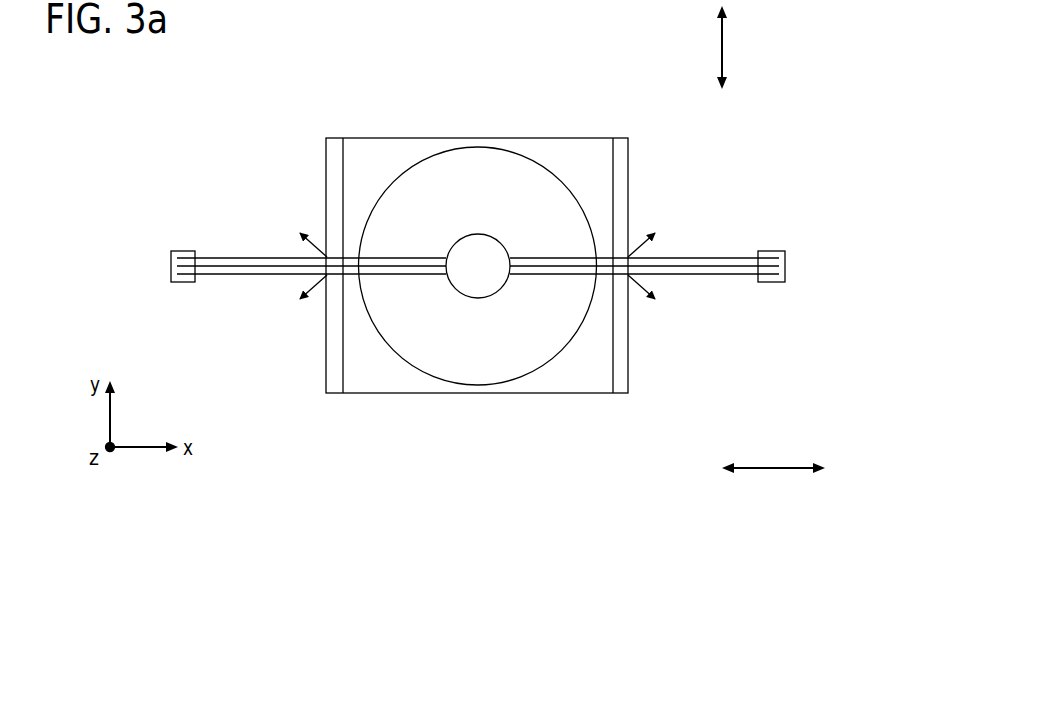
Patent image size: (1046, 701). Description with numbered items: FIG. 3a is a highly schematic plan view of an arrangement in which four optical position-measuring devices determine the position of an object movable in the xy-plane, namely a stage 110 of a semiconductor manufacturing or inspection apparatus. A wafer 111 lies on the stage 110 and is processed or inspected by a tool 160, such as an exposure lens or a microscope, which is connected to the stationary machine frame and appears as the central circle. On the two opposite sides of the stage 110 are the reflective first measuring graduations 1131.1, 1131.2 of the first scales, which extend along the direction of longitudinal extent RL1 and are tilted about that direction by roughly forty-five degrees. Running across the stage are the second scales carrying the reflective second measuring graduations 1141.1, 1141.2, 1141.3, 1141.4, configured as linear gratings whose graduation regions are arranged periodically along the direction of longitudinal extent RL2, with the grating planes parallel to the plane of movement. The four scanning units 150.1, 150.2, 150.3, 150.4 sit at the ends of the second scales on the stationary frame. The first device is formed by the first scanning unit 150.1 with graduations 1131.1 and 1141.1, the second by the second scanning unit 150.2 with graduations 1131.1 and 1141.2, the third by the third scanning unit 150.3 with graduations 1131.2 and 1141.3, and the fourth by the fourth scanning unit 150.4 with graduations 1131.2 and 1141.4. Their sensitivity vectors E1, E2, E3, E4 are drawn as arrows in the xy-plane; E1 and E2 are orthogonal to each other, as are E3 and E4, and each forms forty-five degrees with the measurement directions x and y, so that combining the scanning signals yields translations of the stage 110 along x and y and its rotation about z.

The stage 110 is at (376, 375).
The wafer 111 is at (483, 165).
The tool 160 is at (476, 298).
The first measuring graduation 1131.1 is at (334, 380).
The first measuring graduation 1131.2 is at (620, 380).
The second measuring graduation 1141.1 is at (227, 258).
The second measuring graduation 1141.2 is at (212, 275).
The second measuring graduation 1141.3 is at (737, 275).
The second measuring graduation 1141.4 is at (727, 258).
The first scanning unit 150.1 is at (178, 258).
The second scanning unit 150.2 is at (178, 275).
The third scanning unit 150.3 is at (778, 275).
The fourth scanning unit 150.4 is at (778, 258).
The sensitivity vector E1 is at (311, 243).
The sensitivity vector E2 is at (311, 289).
The sensitivity vector E3 is at (643, 289).
The sensitivity vector E4 is at (643, 243).
The direction of longitudinal extent RL1 is at (739, 47).
The direction of longitudinal extent RL2 is at (773, 450).